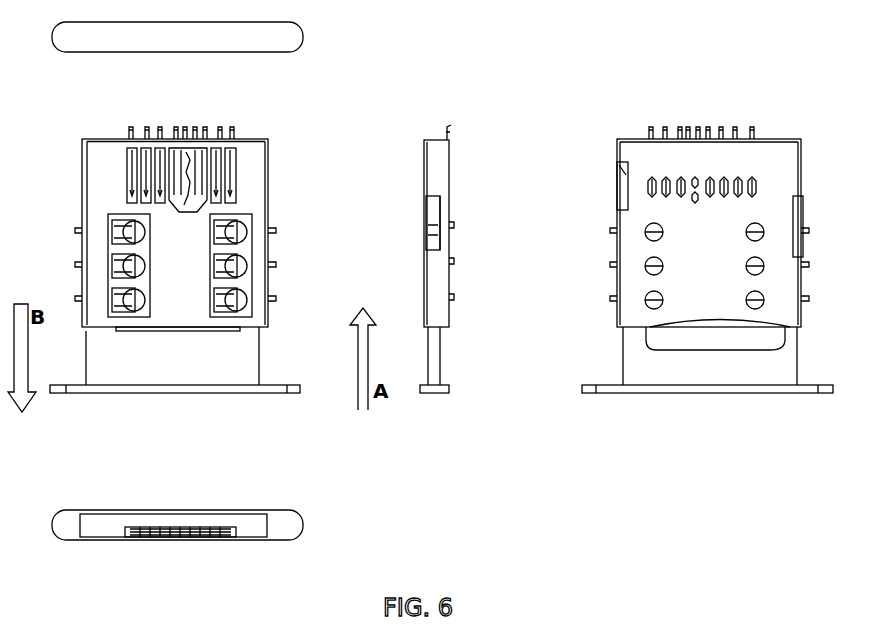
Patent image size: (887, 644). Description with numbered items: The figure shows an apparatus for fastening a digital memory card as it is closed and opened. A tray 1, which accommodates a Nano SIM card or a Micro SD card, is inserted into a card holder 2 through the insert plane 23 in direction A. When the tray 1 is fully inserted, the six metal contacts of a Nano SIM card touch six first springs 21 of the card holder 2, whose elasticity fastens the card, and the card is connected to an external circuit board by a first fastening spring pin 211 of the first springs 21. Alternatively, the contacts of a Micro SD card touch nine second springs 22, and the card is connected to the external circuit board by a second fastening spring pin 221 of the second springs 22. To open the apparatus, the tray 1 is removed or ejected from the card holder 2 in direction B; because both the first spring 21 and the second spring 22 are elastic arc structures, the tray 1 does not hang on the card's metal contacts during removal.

The tray 1 is at (110, 347).
The card holder 2 is at (247, 165).
The first spring 21 is at (236, 217).
The first fastening spring pin 211 is at (277, 230).
The second spring 22 is at (127, 160).
The second fastening spring pin 221 is at (131, 132).
The insert plane 23 is at (260, 327).